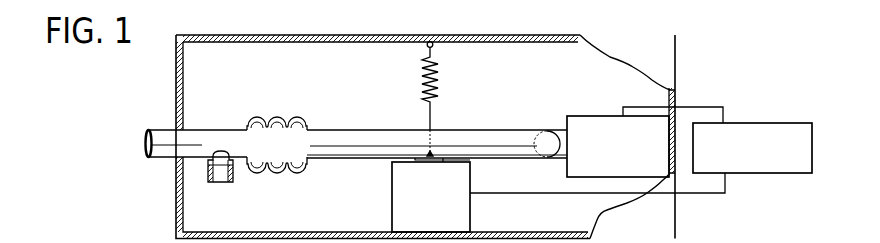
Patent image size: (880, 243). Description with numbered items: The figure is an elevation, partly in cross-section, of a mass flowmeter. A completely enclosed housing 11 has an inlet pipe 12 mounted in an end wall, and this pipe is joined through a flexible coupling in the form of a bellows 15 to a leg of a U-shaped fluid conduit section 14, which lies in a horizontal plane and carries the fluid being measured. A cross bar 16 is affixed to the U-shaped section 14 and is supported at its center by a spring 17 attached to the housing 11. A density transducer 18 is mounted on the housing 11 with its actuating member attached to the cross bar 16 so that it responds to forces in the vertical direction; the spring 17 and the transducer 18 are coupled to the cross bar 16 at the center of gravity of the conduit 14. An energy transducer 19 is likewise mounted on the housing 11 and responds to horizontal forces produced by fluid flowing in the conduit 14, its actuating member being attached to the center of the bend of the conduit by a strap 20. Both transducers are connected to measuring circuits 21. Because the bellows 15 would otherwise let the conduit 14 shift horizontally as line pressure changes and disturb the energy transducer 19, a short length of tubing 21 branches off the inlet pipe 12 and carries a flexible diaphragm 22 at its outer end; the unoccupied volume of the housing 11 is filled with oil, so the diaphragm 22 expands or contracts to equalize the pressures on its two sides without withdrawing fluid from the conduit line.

The housing 11 is at (672, 205).
The inlet pipe 12 is at (165, 130).
The U-shaped fluid conduit section 14 is at (485, 138).
The bellows 15 is at (267, 120).
The cross bar 16 is at (470, 160).
The spring 17 is at (440, 72).
The density transducer 18 is at (470, 205).
The energy transducer 19 is at (609, 107).
The strap 20 is at (555, 126).
The measuring circuits 21 is at (761, 123).
The flexible diaphragm 22 is at (222, 182).